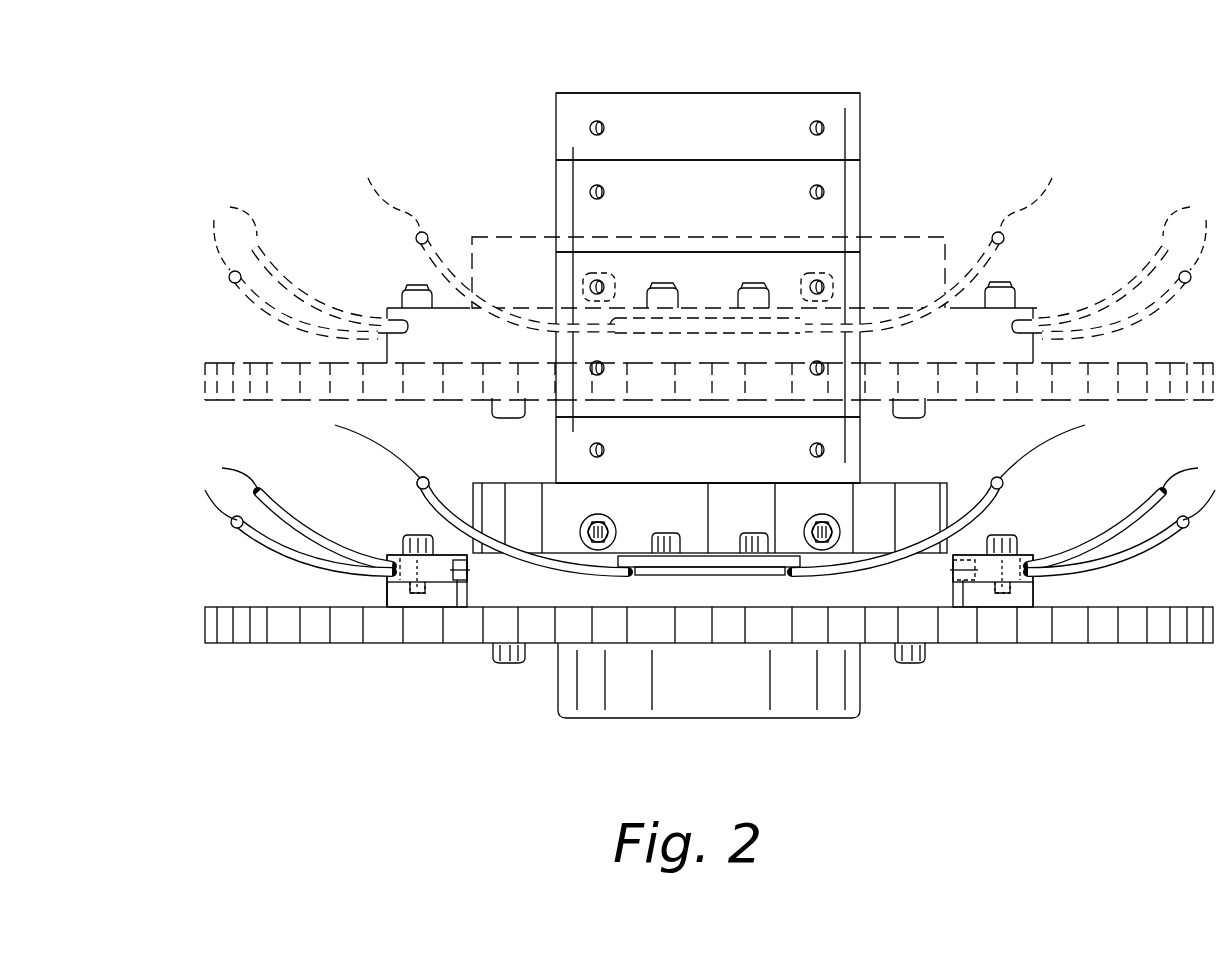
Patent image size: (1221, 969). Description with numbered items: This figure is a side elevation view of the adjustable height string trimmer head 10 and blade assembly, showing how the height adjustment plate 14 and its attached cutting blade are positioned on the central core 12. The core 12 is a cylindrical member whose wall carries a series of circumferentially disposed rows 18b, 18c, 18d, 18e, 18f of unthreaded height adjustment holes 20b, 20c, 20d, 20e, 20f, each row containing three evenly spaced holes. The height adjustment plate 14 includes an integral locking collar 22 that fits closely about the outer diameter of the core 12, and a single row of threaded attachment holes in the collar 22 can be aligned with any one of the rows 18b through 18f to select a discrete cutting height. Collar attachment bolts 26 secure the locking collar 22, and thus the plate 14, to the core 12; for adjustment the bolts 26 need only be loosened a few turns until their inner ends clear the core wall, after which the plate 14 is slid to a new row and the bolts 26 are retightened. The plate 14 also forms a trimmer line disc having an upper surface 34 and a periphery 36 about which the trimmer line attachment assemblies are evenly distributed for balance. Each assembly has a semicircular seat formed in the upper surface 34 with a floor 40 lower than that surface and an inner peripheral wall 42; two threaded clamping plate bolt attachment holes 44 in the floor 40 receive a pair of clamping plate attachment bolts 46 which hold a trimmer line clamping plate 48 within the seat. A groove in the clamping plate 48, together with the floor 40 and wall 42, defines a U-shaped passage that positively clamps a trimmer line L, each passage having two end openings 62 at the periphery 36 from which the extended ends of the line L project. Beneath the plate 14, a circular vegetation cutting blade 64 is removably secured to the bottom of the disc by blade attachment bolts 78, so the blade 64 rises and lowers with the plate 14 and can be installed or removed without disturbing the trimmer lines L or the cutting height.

The adjustable height string trimmer head 10 is at (515, 790).
The central core 12 is at (722, 93).
The height adjustment plate 14 is at (475, 355).
The row of height adjustment holes 18b is at (733, 463).
The row of height adjustment holes 18c is at (732, 390).
The row of height adjustment holes 18d is at (733, 298).
The row of height adjustment holes 18e is at (733, 208).
The row of height adjustment holes 18f is at (729, 143).
The height adjustment holes 20b is at (590, 450).
The height adjustment holes 20c is at (590, 367).
The height adjustment holes 20d is at (590, 287).
The height adjustment holes 20e is at (590, 193).
The height adjustment holes 20f is at (590, 128).
The locking collar 22 is at (682, 519).
The collar attachment bolts 26 is at (580, 530).
The upper surface 34 is at (455, 550).
The periphery 36 is at (385, 595).
The floor 40 is at (442, 600).
The inner peripheral wall 42 is at (470, 565).
The clamping plate bolt attachment holes 44 is at (418, 600).
The clamping plate attachment bolts 46 is at (755, 285).
The trimmer line clamping plate 48 is at (1055, 519).
The end openings 62 is at (400, 582).
The circular vegetation cutting blade 64 is at (290, 645).
The blade attachment bolts 78 is at (510, 663).
The trimmer line L is at (707, 363).